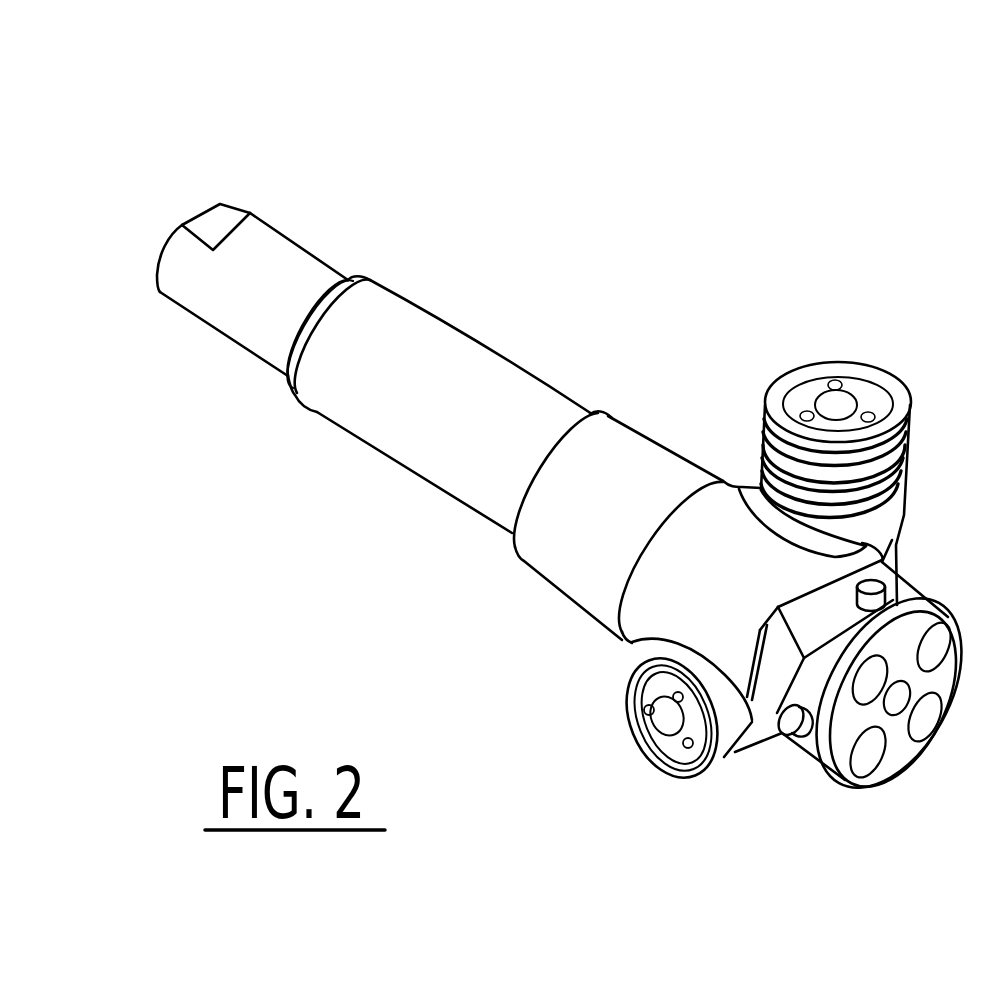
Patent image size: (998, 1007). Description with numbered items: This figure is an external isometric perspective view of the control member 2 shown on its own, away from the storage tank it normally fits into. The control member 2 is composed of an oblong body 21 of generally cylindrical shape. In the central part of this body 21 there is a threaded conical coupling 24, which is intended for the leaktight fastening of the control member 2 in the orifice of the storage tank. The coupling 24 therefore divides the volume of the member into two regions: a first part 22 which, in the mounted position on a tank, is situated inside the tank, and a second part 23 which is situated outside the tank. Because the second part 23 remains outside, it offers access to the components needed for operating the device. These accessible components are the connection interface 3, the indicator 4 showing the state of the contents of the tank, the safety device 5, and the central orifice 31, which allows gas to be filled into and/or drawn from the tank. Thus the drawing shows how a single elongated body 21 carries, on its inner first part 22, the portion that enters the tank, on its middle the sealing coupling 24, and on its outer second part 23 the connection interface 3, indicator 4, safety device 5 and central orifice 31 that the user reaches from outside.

The control member 2 is at (432, 575).
The oblong body 21 is at (559, 376).
The first part 22 is at (320, 43).
The second part 23 is at (777, 333).
The threaded conical coupling 24 is at (593, 513).
The safety device 5 is at (840, 407).
The connection interface 3 is at (792, 741).
The central orifice 31 is at (884, 790).
The indicator 4 is at (642, 742).